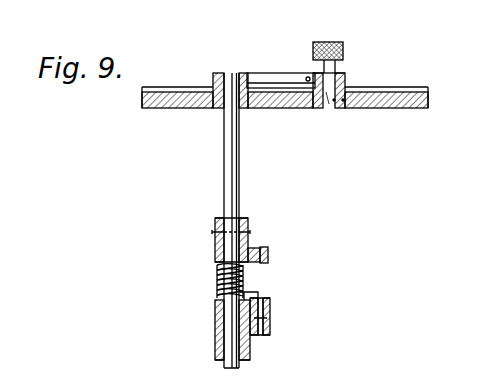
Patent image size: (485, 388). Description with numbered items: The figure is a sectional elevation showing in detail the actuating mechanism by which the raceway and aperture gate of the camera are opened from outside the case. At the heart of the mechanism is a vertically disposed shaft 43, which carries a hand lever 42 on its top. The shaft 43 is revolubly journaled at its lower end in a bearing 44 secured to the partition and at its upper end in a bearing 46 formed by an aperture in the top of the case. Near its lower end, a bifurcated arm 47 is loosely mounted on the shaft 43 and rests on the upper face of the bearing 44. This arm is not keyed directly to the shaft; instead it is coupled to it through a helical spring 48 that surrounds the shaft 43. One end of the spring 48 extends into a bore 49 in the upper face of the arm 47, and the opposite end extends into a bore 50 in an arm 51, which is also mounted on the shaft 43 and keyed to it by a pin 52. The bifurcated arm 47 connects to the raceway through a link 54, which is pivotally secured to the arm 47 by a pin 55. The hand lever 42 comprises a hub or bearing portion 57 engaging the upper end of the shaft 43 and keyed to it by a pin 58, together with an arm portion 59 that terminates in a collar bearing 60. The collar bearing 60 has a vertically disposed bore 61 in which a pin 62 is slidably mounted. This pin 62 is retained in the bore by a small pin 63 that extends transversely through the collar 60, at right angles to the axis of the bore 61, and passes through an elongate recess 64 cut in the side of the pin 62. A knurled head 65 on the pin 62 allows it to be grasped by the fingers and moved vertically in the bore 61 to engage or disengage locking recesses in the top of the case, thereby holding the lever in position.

The hand lever 42 is at (286, 65).
The shaft 43 is at (230, 160).
The bearing 44 is at (250, 352).
The bearing 46 is at (214, 108).
The bifurcated arm 47 is at (271, 311).
The helical spring 48 is at (221, 283).
The bore 49 is at (238, 305).
The bore 50 is at (270, 254).
The arm 51 is at (216, 250).
The pin 52 is at (212, 232).
The link 54 is at (271, 325).
The pin 55 is at (258, 296).
The hub or bearing portion 57 is at (216, 75).
The pin 58 is at (233, 80).
The arm portion 59 is at (262, 82).
The collar bearing 60 is at (346, 76).
The bore 61 is at (322, 108).
The pin 62 is at (331, 72).
The small pin 63 is at (333, 108).
The elongate recess 64 is at (344, 108).
The knurled head 65 is at (343, 47).